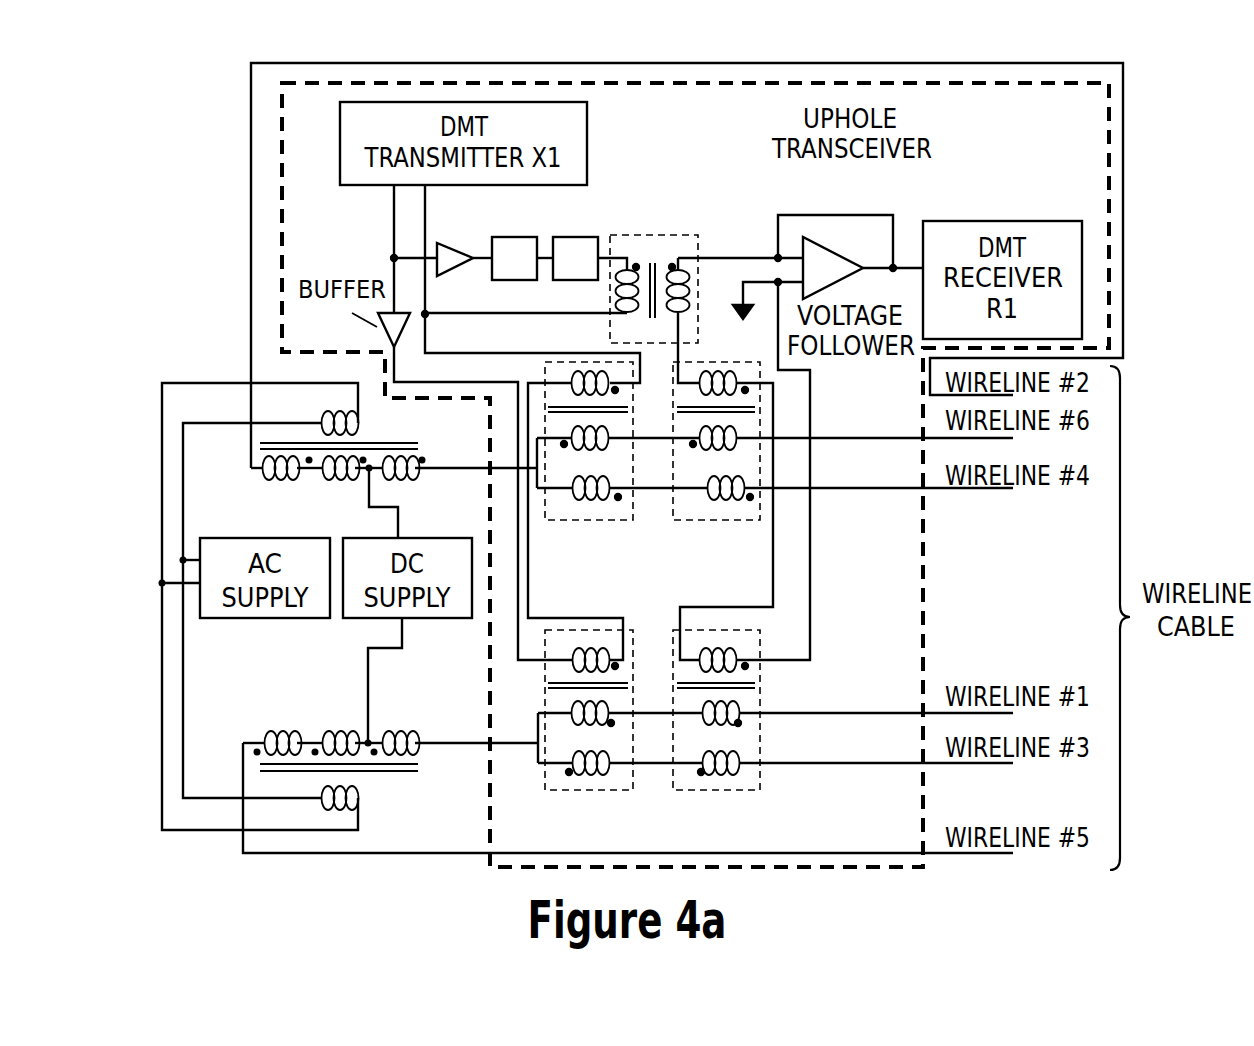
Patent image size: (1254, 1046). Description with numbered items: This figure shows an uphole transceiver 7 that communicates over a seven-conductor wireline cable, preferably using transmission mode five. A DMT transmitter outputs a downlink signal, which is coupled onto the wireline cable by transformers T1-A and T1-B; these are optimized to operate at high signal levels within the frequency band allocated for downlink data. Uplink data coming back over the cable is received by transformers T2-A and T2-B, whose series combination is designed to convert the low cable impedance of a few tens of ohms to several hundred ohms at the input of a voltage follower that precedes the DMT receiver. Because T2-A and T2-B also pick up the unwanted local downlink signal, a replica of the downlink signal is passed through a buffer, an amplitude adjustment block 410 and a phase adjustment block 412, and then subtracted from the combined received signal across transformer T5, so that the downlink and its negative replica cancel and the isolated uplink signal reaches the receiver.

The uphole transceiver 7 is at (695, 472).
The amplitude adjustment block 410 is at (506, 235).
The phase adjustment block 412 is at (573, 235).
The transformer T5 is at (650, 232).
The transformer T1-A is at (615, 522).
The transformer T2-A is at (733, 522).
The transformer T1-B is at (612, 792).
The transformer T2-B is at (735, 792).